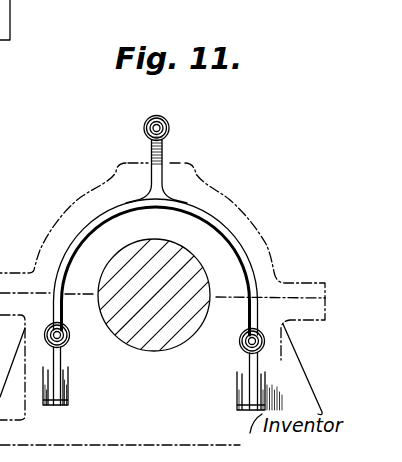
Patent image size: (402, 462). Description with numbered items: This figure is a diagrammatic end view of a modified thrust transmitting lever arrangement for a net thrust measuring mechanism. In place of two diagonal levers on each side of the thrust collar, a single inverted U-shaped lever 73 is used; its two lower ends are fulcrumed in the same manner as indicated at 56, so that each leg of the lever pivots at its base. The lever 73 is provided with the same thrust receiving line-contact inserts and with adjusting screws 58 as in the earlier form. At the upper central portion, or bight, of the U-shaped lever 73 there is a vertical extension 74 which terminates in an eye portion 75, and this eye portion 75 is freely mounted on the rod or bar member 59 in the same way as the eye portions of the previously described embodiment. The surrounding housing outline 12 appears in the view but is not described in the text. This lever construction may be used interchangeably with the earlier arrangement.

The housing 12 is at (230, 208).
The inverted U-shaped lever 73 is at (190, 270).
The vertical extension 74 is at (157, 175).
The eye portion 75 is at (160, 90).
The rod or bar member 59 is at (167, 120).
The adjusting screws 58 is at (69, 338).
The fulcrum 56 is at (73, 387).